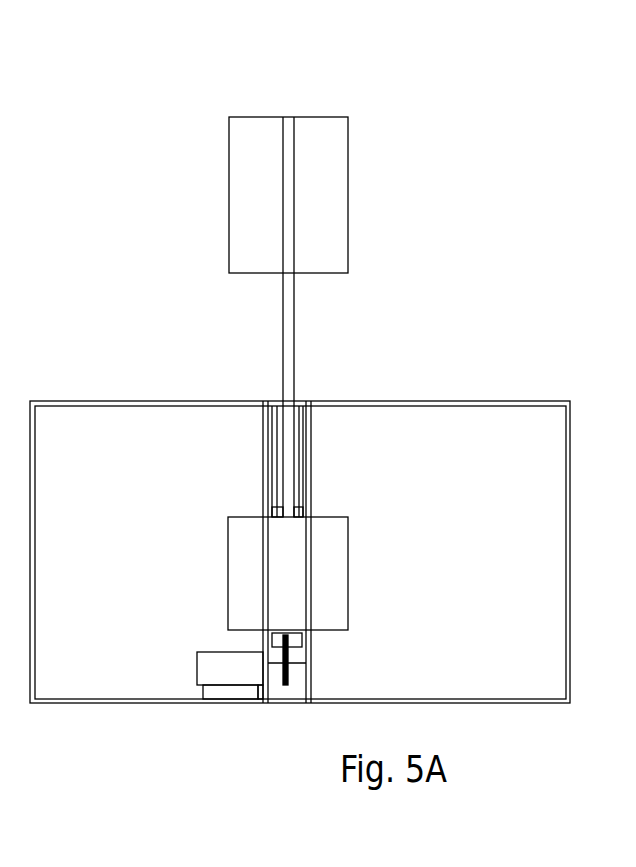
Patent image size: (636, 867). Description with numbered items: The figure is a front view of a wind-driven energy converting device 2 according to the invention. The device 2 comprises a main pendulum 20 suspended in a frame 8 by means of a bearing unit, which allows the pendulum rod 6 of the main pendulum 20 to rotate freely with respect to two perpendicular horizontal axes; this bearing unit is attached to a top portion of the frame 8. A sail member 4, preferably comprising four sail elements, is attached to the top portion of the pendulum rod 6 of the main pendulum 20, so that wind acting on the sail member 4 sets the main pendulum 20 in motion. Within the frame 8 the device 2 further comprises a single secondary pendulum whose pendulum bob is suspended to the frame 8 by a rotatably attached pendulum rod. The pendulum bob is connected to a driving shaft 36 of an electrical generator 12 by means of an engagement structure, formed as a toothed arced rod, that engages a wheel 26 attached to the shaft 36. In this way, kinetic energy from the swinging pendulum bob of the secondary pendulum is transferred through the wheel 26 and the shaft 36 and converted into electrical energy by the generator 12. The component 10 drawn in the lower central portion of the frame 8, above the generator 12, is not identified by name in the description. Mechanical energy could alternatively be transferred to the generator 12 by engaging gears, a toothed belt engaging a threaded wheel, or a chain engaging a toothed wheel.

The wind-driven energy converting device 2 is at (95, 185).
The sail member 4 is at (213, 135).
The pendulum rod 6 is at (283, 368).
The main pendulum 20 is at (237, 323).
The frame 8 is at (485, 401).
The drive unit 10 is at (228, 592).
The electrical generator 12 is at (197, 665).
The wheel 26 is at (290, 663).
The driving shaft 36 is at (287, 677).